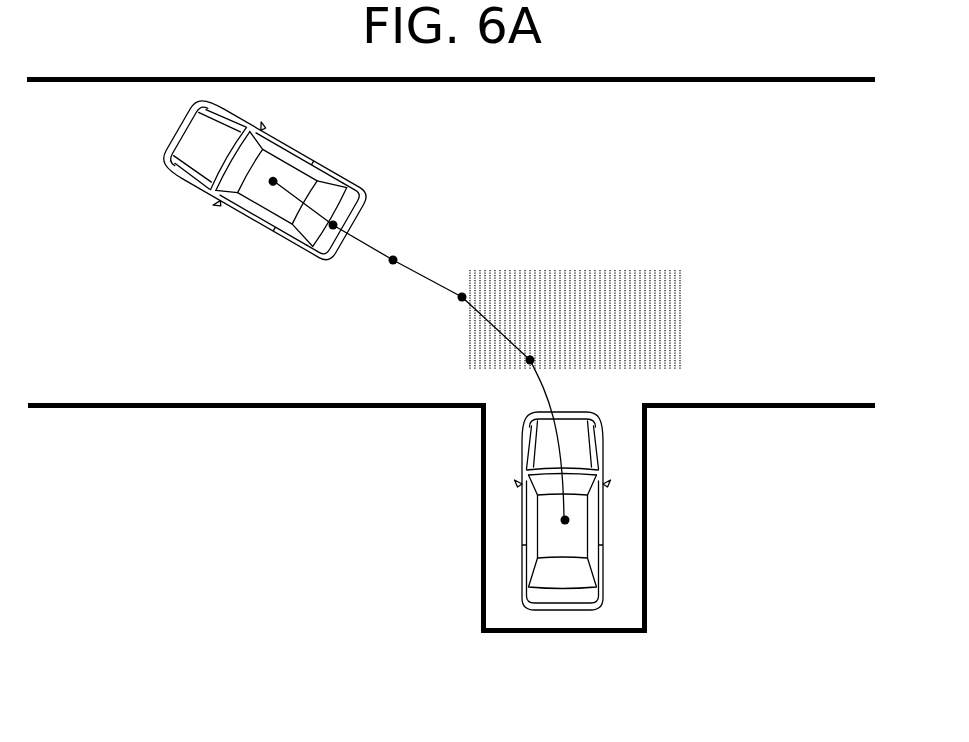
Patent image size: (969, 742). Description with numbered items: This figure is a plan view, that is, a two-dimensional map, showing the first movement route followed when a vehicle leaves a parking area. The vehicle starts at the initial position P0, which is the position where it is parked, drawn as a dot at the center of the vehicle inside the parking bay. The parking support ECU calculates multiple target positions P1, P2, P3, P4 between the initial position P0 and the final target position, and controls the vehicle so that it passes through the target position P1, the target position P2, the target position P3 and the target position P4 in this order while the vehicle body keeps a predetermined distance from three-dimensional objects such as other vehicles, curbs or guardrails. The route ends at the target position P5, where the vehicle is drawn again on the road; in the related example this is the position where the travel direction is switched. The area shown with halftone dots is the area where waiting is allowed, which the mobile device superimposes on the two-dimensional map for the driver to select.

The initial position P0 is at (566, 519).
The target position P1 is at (532, 356).
The target position P2 is at (464, 293).
The target position P3 is at (394, 256).
The target position P4 is at (335, 222).
The target position P5 is at (293, 150).